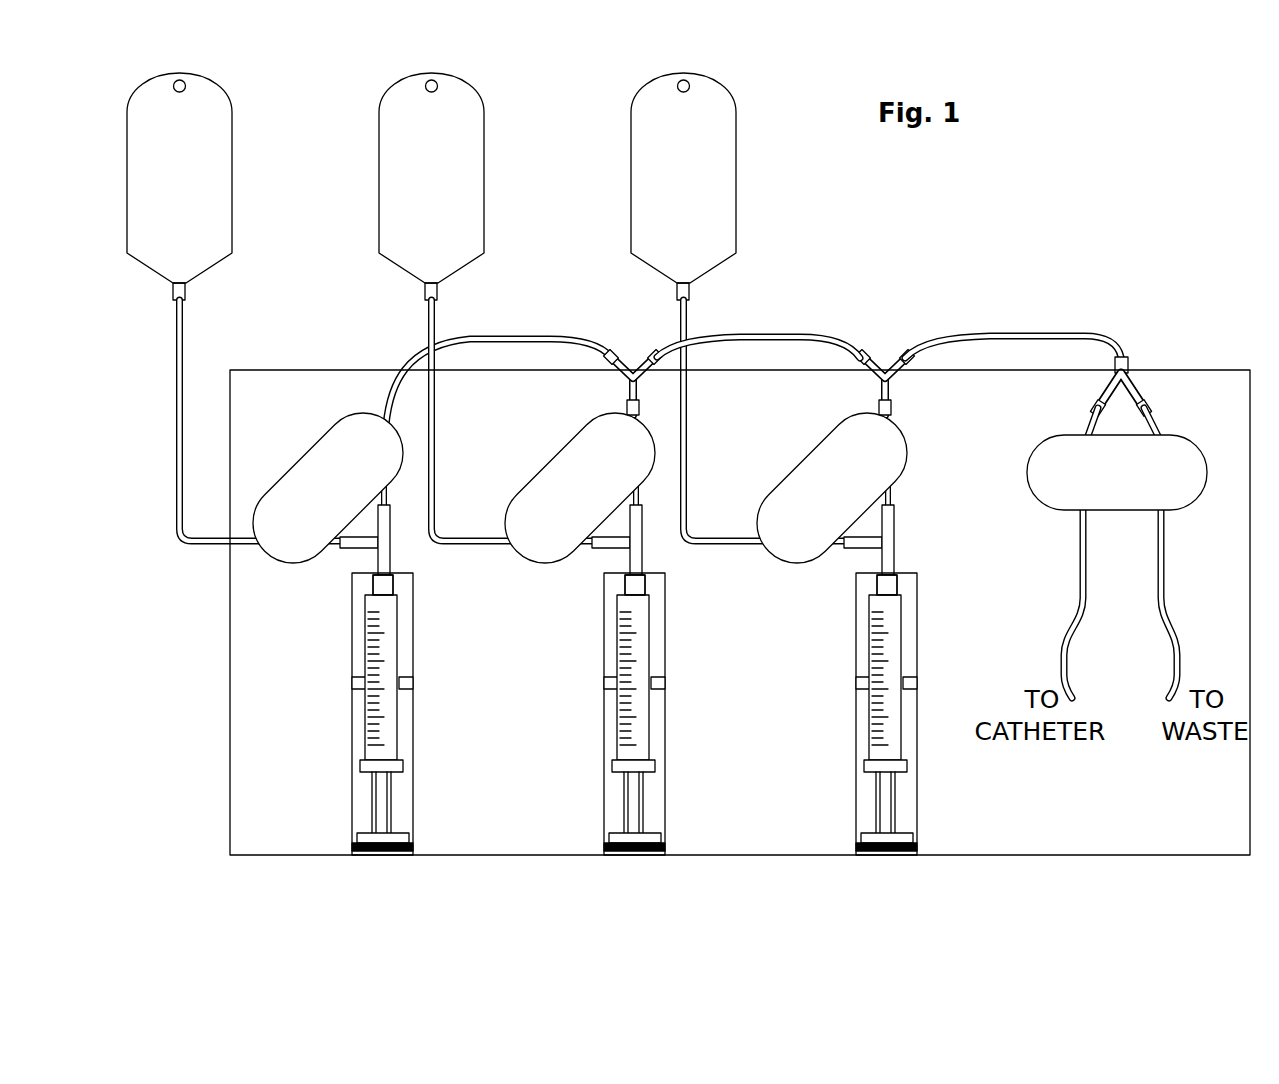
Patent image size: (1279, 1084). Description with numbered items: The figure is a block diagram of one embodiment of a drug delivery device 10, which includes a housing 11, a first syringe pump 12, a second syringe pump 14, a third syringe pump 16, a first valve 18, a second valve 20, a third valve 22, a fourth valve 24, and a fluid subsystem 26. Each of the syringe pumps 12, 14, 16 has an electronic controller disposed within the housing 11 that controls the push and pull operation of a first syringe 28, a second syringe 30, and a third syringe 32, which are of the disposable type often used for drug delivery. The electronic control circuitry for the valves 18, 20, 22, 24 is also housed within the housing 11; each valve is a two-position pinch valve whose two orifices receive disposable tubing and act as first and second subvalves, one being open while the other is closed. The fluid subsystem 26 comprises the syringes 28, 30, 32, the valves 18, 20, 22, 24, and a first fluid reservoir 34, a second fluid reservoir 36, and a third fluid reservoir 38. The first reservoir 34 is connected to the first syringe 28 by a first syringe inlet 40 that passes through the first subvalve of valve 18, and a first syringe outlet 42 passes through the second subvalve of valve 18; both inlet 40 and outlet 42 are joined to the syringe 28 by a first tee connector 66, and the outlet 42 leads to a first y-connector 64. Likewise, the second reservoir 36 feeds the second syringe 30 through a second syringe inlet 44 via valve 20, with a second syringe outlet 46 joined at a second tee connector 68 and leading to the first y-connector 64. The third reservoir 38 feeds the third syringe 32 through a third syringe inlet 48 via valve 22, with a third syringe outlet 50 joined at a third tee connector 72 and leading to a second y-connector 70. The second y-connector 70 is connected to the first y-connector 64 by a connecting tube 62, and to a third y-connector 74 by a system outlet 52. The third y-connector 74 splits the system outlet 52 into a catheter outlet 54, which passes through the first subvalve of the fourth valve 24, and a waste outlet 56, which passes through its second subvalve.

The drug delivery device 10 is at (1114, 294).
The housing 11 is at (1032, 810).
The first syringe pump 12 is at (360, 813).
The second syringe pump 14 is at (592, 714).
The third syringe pump 16 is at (842, 714).
The first valve 18 is at (278, 535).
The second valve 20 is at (543, 537).
The third valve 22 is at (795, 537).
The fourth valve 24 is at (1123, 482).
The fluid subsystem 26 is at (752, 294).
The first syringe 28 is at (388, 712).
The second syringe 30 is at (599, 713).
The third syringe 32 is at (848, 713).
The first fluid reservoir 34 is at (217, 147).
The second fluid reservoir 36 is at (460, 180).
The third fluid reservoir 38 is at (712, 180).
The first syringe inlet 40 is at (178, 417).
The first syringe outlet 42 is at (393, 380).
The second syringe inlet 44 is at (522, 475).
The second syringe outlet 46 is at (626, 481).
The third syringe inlet 48 is at (774, 475).
The third syringe outlet 50 is at (882, 482).
The system outlet 52 is at (985, 332).
The catheter outlet 54 is at (1082, 427).
The waste outlet 56 is at (1165, 427).
The connecting tube 62 is at (810, 332).
The first y-connector 64 is at (632, 357).
The first tee connector 66 is at (364, 585).
The second tee connector 68 is at (598, 643).
The second y-connector 70 is at (890, 345).
The third tee connector 72 is at (850, 643).
The third y-connector 74 is at (1140, 385).